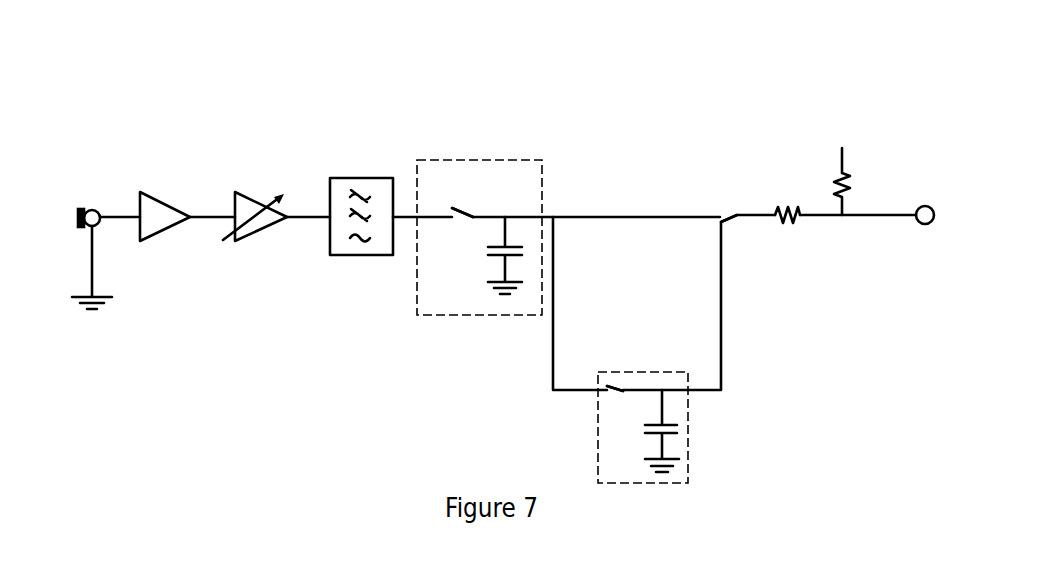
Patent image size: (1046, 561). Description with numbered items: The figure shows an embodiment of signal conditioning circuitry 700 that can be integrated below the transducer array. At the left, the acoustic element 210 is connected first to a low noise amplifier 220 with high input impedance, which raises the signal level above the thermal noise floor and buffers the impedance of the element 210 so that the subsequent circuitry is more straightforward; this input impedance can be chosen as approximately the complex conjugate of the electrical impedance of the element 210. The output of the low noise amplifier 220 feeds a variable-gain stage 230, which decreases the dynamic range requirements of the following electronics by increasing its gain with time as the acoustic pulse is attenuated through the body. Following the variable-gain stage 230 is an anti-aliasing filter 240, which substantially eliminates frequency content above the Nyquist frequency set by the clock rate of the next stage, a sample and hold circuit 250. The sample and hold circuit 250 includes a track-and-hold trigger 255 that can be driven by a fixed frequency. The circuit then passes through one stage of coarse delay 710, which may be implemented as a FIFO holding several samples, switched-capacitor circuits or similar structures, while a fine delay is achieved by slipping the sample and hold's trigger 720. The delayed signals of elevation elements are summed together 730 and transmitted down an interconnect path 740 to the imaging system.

The acoustic element 210 is at (93, 209).
The low noise amplifier 220 is at (162, 237).
The variable-gain stage 230 is at (260, 235).
The anti-aliasing filter 240 is at (358, 257).
The sample and hold circuit 250 is at (487, 320).
The track-and-hold trigger 255 is at (462, 201).
The signal conditioning circuitry 700 is at (239, 144).
The stage of coarse delay 710 is at (645, 368).
The sample and hold's trigger 720 is at (730, 207).
The summing of delayed signals 730 is at (840, 148).
The interconnect path 740 is at (921, 228).